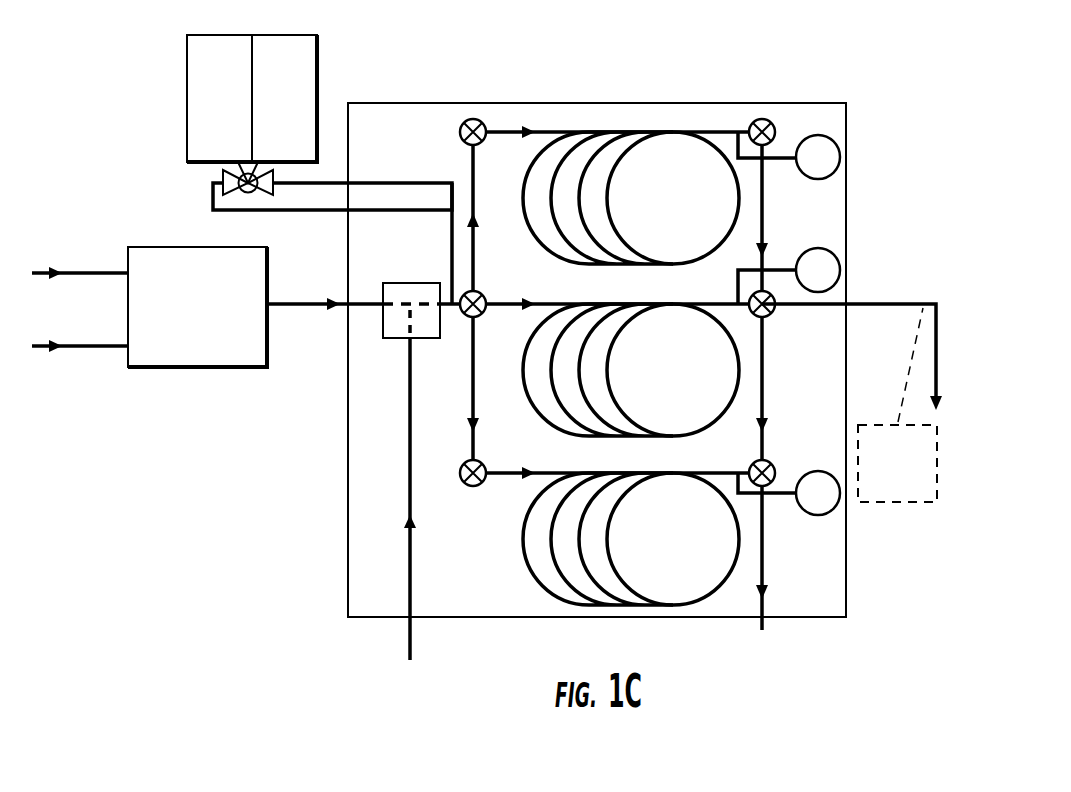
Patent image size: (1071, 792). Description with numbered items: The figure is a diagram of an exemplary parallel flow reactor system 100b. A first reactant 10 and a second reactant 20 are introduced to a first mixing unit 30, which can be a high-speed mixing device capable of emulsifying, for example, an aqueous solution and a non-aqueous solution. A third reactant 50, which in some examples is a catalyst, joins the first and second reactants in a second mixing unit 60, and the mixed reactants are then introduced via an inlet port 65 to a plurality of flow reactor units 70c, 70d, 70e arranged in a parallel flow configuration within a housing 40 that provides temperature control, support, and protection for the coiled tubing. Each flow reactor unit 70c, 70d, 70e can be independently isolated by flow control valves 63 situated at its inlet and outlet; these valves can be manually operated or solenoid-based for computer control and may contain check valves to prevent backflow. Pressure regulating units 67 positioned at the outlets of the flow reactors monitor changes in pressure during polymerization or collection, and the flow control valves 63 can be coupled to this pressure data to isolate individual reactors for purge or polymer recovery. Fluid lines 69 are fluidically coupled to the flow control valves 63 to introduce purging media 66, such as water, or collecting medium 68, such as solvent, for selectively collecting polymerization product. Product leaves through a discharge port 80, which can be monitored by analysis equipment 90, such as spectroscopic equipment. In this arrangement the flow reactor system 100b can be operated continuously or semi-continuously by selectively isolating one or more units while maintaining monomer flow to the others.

The first reactant 10 is at (80, 273).
The second reactant 20 is at (80, 346).
The first mixing unit 30 is at (210, 319).
The housing 40 is at (425, 156).
The third reactant 50 is at (413, 632).
The second mixing unit 60 is at (413, 282).
The flow control valve 63 is at (484, 292).
The inlet port 65 is at (366, 308).
The purging media 66 is at (227, 104).
The pressure regulating unit 67 is at (818, 135).
The collecting medium 68 is at (292, 104).
The fluid line 69 is at (451, 236).
The flow reactor unit 70e is at (740, 196).
The flow reactor unit 70d is at (740, 366).
The flow reactor unit 70c is at (740, 538).
The discharge port 80 is at (872, 308).
The analysis equipment 90 is at (908, 472).
The flow reactor system 100b is at (571, 75).